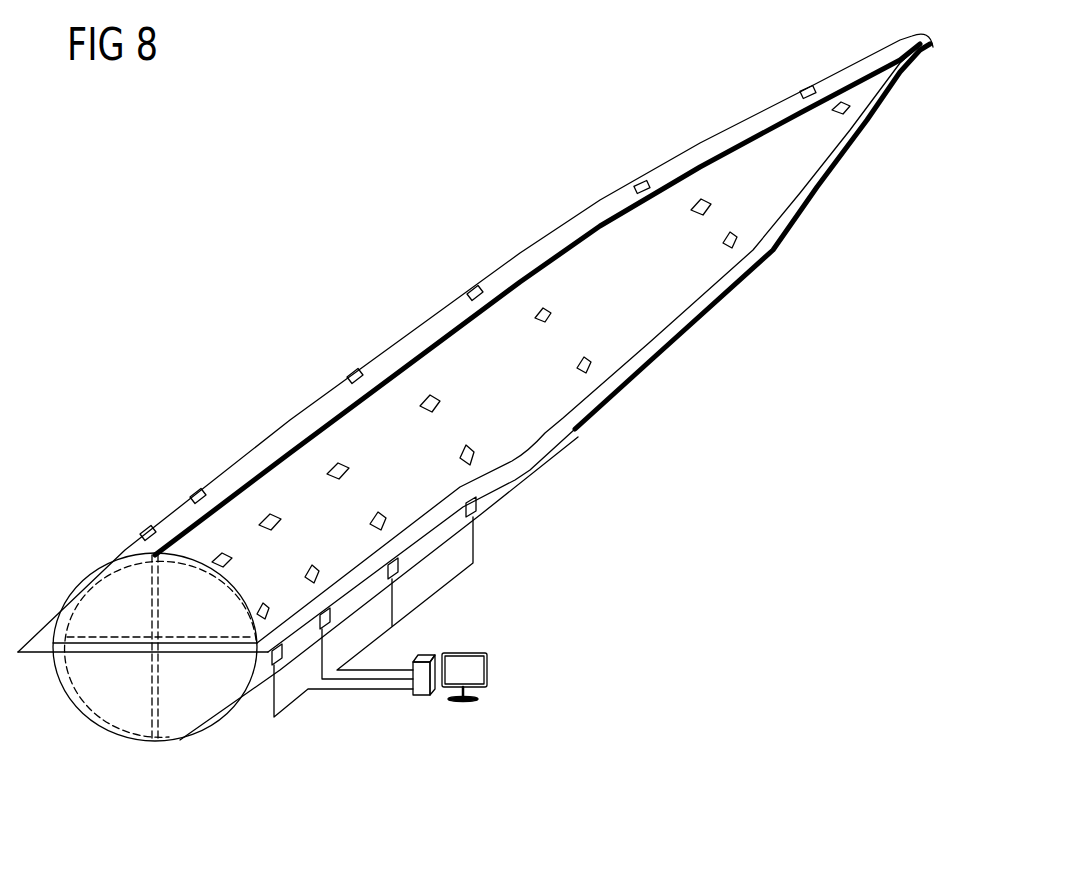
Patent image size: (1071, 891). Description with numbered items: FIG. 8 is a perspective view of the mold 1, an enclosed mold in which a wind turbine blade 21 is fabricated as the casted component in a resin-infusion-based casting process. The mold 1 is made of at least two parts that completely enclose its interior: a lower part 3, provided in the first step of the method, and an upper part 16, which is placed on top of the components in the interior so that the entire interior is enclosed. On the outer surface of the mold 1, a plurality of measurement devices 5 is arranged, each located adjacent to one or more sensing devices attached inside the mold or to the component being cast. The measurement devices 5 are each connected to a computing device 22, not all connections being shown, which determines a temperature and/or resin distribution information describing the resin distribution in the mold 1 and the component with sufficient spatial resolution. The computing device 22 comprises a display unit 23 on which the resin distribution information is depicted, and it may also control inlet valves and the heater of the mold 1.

The mold 1 is at (654, 322).
The wind turbine blade 21 is at (542, 299).
The lower part 3 is at (190, 720).
The upper part 16 is at (92, 598).
The measurement device 5 is at (268, 663).
The computing device 22 is at (423, 696).
The display unit 23 is at (487, 668).